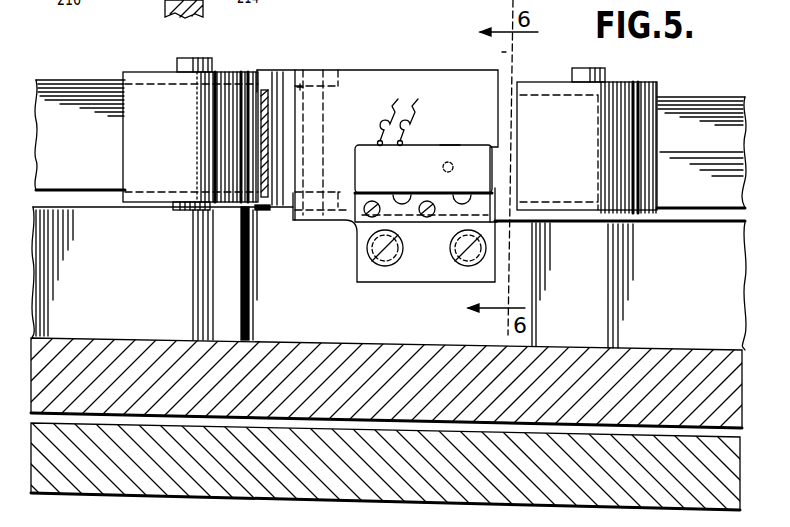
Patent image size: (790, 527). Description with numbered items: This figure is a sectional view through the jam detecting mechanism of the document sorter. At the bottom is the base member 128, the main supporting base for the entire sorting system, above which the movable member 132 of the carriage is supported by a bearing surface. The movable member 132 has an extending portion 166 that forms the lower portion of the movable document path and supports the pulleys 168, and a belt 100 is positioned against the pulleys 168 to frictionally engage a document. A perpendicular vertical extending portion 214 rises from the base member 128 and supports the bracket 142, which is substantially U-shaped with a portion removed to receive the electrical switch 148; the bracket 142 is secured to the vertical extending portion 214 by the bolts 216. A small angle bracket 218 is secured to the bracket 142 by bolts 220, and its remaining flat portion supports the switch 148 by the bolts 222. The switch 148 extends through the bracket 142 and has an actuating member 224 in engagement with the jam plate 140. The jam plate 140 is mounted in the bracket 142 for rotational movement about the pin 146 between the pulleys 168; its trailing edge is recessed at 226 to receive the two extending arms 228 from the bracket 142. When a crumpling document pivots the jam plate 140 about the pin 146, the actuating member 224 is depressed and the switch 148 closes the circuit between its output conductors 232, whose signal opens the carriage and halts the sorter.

The belt 100 is at (50, 90).
The base member 128 is at (636, 445).
The movable member 132 is at (102, 350).
The jam plate 140 is at (502, 52).
The bracket 142 is at (388, 77).
The pin 146 is at (313, 72).
The electrical switch 148 is at (448, 145).
The extending portion 166 is at (235, 285).
The pulley 168 is at (125, 72).
The vertical extending portion 214 is at (260, 320).
The bolts 216 is at (456, 262).
The angle bracket 218 is at (480, 186).
The bolts 220 is at (428, 217).
The bolts 222 is at (497, 222).
The actuating member 224 is at (443, 165).
The recess 226 is at (340, 80).
The extending arms 228 is at (128, 0).
The output conductors 232 is at (403, 101).